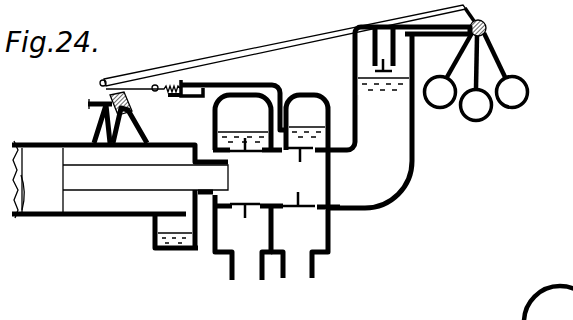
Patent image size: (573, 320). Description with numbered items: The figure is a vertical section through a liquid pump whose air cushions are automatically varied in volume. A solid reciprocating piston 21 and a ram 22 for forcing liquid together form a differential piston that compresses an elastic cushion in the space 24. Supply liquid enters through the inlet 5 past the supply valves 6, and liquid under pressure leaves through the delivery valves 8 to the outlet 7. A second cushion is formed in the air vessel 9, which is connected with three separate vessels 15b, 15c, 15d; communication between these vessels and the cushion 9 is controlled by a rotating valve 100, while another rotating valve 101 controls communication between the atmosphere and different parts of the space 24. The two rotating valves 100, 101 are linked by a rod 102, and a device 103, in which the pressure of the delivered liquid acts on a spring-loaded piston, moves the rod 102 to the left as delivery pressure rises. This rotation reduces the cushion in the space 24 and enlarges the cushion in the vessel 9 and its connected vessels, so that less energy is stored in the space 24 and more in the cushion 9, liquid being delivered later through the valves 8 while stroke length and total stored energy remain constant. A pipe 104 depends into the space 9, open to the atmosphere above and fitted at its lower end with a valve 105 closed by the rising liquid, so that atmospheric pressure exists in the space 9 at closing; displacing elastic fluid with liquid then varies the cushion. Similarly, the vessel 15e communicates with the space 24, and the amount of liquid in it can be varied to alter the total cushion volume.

The inlet 5 is at (250, 278).
The supply valves 6 is at (245, 153).
The outlet 7 is at (300, 276).
The delivery valves 8 is at (300, 162).
The air vessel 9 is at (367, 30).
The vessel 15b is at (440, 101).
The vessel 15c is at (476, 113).
The vessel 15d is at (512, 101).
The vessel 15e is at (166, 222).
The solid reciprocating piston 21 is at (45, 192).
The ram 22 is at (100, 180).
The space 24 is at (165, 157).
The rotating valve 100 is at (488, 28).
The rotating valve 101 is at (130, 104).
The rod 102 is at (282, 48).
The pressure-actuated device 103 is at (197, 82).
The pipe 104 is at (396, 42).
The valve 105 is at (356, 95).